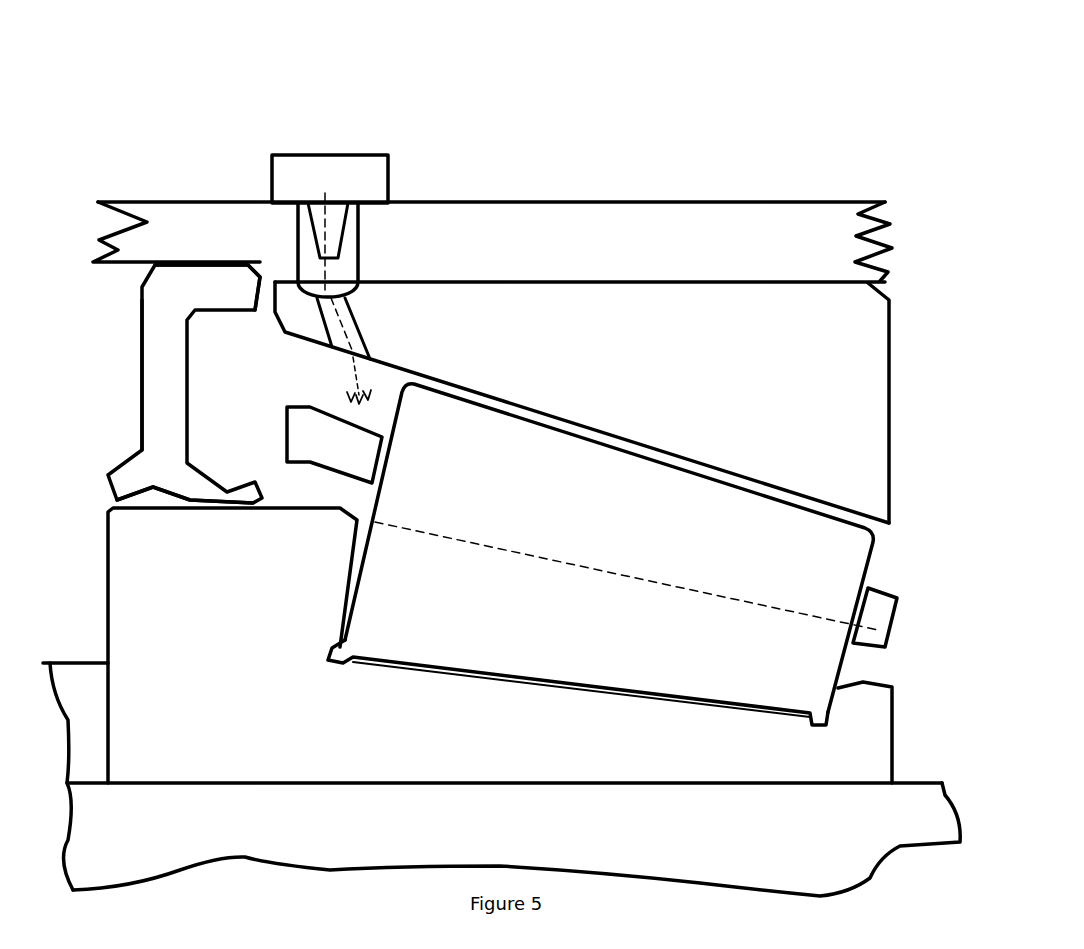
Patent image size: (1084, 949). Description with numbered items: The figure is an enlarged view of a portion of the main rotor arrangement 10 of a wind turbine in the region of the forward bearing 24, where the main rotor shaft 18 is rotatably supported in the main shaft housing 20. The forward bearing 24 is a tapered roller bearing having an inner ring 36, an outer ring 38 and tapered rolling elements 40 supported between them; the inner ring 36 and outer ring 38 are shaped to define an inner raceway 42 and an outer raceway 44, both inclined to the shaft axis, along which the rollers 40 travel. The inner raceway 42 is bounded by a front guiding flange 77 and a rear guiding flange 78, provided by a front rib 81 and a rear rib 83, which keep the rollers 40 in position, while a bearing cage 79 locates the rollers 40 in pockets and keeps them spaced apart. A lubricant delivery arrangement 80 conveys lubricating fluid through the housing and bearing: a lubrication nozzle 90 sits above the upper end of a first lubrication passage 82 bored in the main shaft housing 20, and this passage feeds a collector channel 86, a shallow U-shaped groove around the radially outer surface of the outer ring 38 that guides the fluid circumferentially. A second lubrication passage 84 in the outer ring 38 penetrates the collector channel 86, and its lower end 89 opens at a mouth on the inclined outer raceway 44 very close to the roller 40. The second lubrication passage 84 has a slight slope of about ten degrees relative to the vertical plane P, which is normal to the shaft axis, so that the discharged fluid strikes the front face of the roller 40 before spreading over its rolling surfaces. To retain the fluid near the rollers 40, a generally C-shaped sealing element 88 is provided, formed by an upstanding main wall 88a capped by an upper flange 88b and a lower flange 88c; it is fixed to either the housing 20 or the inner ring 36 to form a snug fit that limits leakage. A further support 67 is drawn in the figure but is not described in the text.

The main rotor arrangement 10 is at (683, 62).
The main rotor shaft 18 is at (398, 855).
The main shaft housing 20 is at (600, 216).
The forward bearing 24 is at (903, 290).
The inner ring 36 is at (219, 694).
The outer ring 38 is at (737, 369).
The rolling elements 40 is at (716, 546).
The inner raceway 42 is at (608, 683).
The outer raceway 44 is at (665, 455).
The support 67 is at (715, 782).
The front guiding flange 77 is at (355, 573).
The rear guiding flange 78 is at (830, 700).
The bearing cage 79 is at (339, 455).
The lubricant delivery arrangement 80 is at (408, 143).
The front rib 81 is at (323, 590).
The first lubrication passage 82 is at (360, 253).
The rear rib 83 is at (858, 722).
The second lubrication passage 84 is at (355, 320).
The collector channel 86 is at (357, 292).
The sealing element 88 is at (193, 384).
The main wall 88a is at (160, 368).
The upper flange 88b is at (205, 300).
The lower flange 88c is at (187, 486).
The lower end 89 is at (337, 352).
The lubrication nozzle 90 is at (330, 154).
The vertical plane P is at (327, 218).